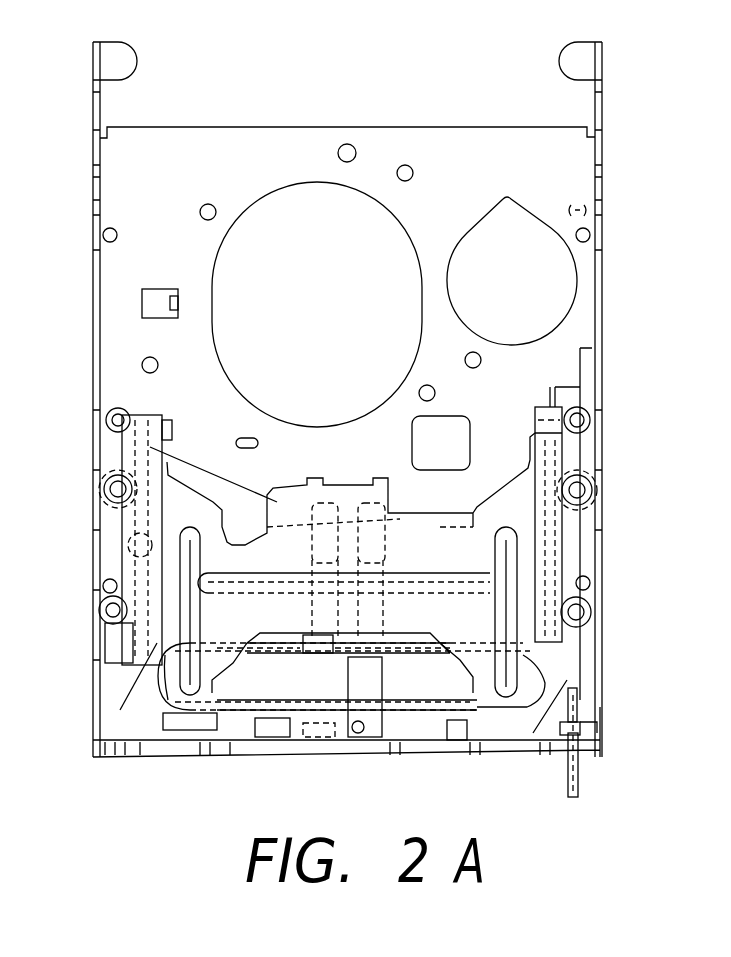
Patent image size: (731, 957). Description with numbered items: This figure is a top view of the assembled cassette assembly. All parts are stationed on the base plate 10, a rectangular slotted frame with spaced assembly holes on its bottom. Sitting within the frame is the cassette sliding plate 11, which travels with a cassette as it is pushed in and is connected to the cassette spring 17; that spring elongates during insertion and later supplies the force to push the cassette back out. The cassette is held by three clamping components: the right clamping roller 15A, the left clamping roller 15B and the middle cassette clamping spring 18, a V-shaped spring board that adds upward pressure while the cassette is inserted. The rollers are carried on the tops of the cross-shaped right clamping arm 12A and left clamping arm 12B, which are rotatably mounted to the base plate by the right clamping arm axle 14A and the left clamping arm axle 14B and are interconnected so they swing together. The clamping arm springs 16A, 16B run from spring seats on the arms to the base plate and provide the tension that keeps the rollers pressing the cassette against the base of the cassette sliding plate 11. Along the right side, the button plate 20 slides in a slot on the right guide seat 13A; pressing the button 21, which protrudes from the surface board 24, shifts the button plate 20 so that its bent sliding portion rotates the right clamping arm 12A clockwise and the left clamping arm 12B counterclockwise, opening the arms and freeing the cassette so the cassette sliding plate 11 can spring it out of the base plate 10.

The base plate 10 is at (375, 160).
The cassette sliding plate 11 is at (150, 447).
The right clamping arm 12A is at (480, 553).
The left clamping arm 12B is at (210, 565).
The right guide seat 13A is at (565, 454).
The right clamping arm axle 14A is at (530, 588).
The left clamping arm axle 14B is at (100, 577).
The right clamping roller 15A is at (565, 476).
The left clamping roller 15B is at (104, 487).
The clamping arm spring 16A is at (453, 717).
The clamping arm spring 16B is at (238, 715).
The cassette spring 17 is at (325, 737).
The cassette clamping spring 18 is at (375, 685).
The button plate 20 is at (577, 722).
The button 21 is at (580, 792).
The surface board 24 is at (188, 756).